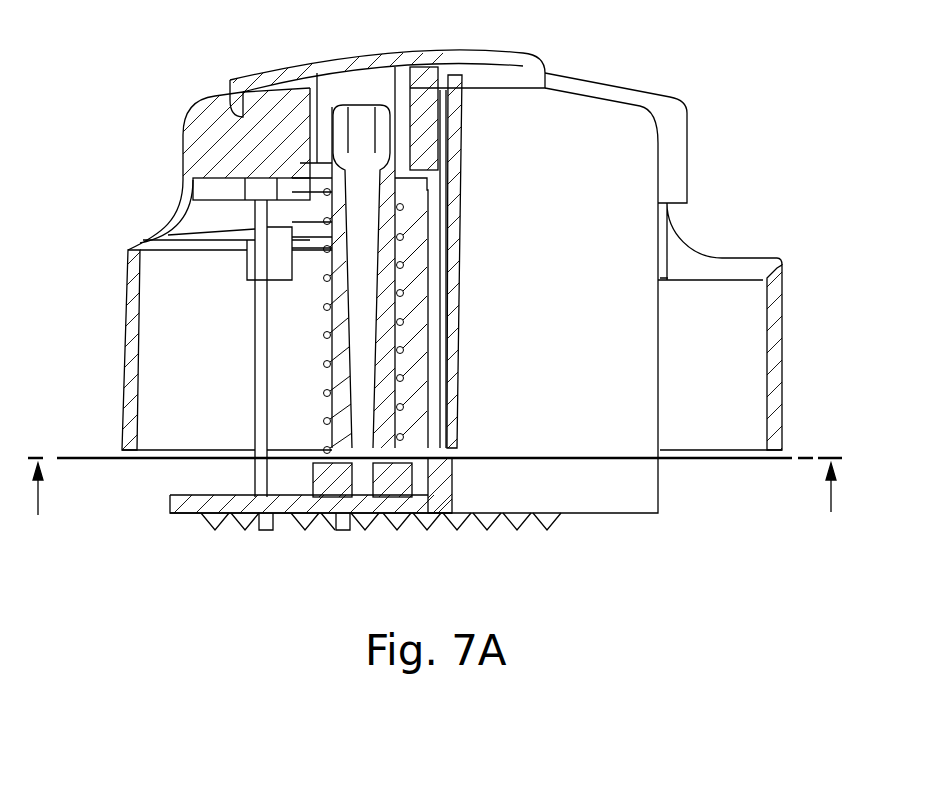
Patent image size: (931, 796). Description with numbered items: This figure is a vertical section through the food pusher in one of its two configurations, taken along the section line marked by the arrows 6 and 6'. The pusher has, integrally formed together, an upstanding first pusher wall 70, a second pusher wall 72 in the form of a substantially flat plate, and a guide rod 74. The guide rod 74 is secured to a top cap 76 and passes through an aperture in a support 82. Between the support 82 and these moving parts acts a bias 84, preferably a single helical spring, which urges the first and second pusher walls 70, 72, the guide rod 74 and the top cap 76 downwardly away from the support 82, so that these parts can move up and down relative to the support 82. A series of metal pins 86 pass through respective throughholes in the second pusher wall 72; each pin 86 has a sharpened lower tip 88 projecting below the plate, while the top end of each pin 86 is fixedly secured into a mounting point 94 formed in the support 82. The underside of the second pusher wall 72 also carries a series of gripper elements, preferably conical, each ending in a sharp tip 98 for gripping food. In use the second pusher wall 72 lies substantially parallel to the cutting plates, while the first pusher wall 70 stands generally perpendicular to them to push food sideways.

The first pusher wall 70 is at (565, 123).
The top cap 76 is at (423, 57).
The mounting point 94 is at (258, 188).
The metal pin 86 is at (260, 380).
The guide rod 74 is at (388, 375).
The bias 84 is at (403, 293).
The support 82 is at (775, 350).
The second pusher wall 72 is at (190, 502).
The sharpened lower tip 88 is at (265, 531).
The sharp tip 98 is at (343, 531).
The section line arrow 6 is at (66, 507).
The section line arrow 6' is at (805, 494).